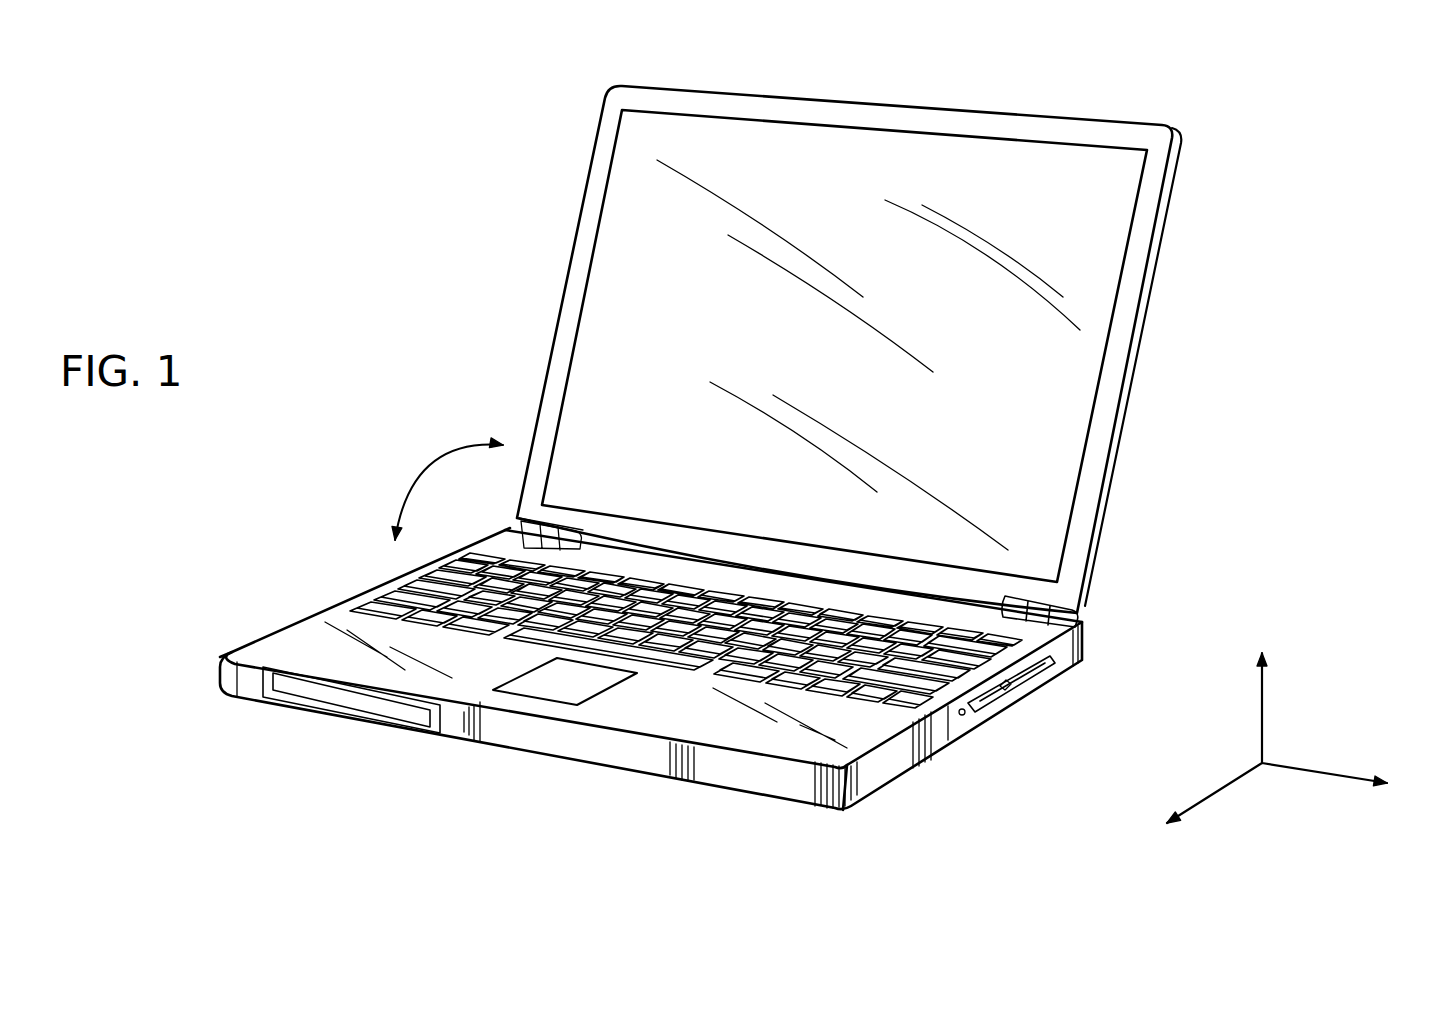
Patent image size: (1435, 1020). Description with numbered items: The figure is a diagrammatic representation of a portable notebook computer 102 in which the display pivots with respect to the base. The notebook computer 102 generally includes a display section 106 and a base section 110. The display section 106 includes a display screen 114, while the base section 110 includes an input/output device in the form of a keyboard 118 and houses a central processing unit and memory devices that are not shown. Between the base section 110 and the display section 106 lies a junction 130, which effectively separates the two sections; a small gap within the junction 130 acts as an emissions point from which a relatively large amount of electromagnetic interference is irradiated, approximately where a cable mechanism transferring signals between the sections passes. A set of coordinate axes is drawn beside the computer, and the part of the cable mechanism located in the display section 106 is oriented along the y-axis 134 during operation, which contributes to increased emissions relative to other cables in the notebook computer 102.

The notebook computer 102 is at (492, 250).
The display section 106 is at (1103, 470).
The display screen 114 is at (852, 381).
The junction 130 is at (953, 600).
The base section 110 is at (880, 775).
The keyboard 118 is at (365, 605).
The y-axis 134 is at (1262, 720).